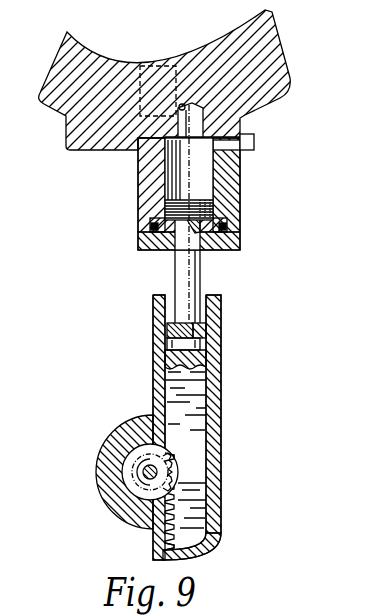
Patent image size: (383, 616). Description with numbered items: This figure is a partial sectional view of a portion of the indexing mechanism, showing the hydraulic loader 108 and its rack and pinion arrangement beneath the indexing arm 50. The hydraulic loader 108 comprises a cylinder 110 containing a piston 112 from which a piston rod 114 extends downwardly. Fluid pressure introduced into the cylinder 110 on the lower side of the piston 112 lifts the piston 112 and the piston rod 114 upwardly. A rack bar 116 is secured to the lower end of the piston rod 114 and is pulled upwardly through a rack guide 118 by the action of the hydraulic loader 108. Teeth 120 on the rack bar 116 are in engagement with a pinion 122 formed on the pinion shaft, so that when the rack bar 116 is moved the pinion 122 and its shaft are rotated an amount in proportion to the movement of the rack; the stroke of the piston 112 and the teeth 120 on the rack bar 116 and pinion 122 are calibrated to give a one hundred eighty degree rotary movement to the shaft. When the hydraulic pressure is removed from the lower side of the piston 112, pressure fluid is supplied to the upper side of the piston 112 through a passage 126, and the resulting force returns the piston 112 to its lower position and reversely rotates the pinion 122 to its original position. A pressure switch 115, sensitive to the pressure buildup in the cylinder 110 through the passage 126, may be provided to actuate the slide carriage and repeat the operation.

The indexing arm 50 is at (70, 152).
The passage 126 is at (182, 105).
The pressure switch 115 is at (254, 141).
The cylinder 110 is at (177, 173).
The piston 112 is at (170, 208).
The hydraulic loader 108 is at (130, 230).
The piston rod 114 is at (180, 288).
The rack bar 116 is at (170, 360).
The rack guide 118 is at (160, 387).
The pinion 122 is at (142, 463).
The teeth 120 is at (161, 527).